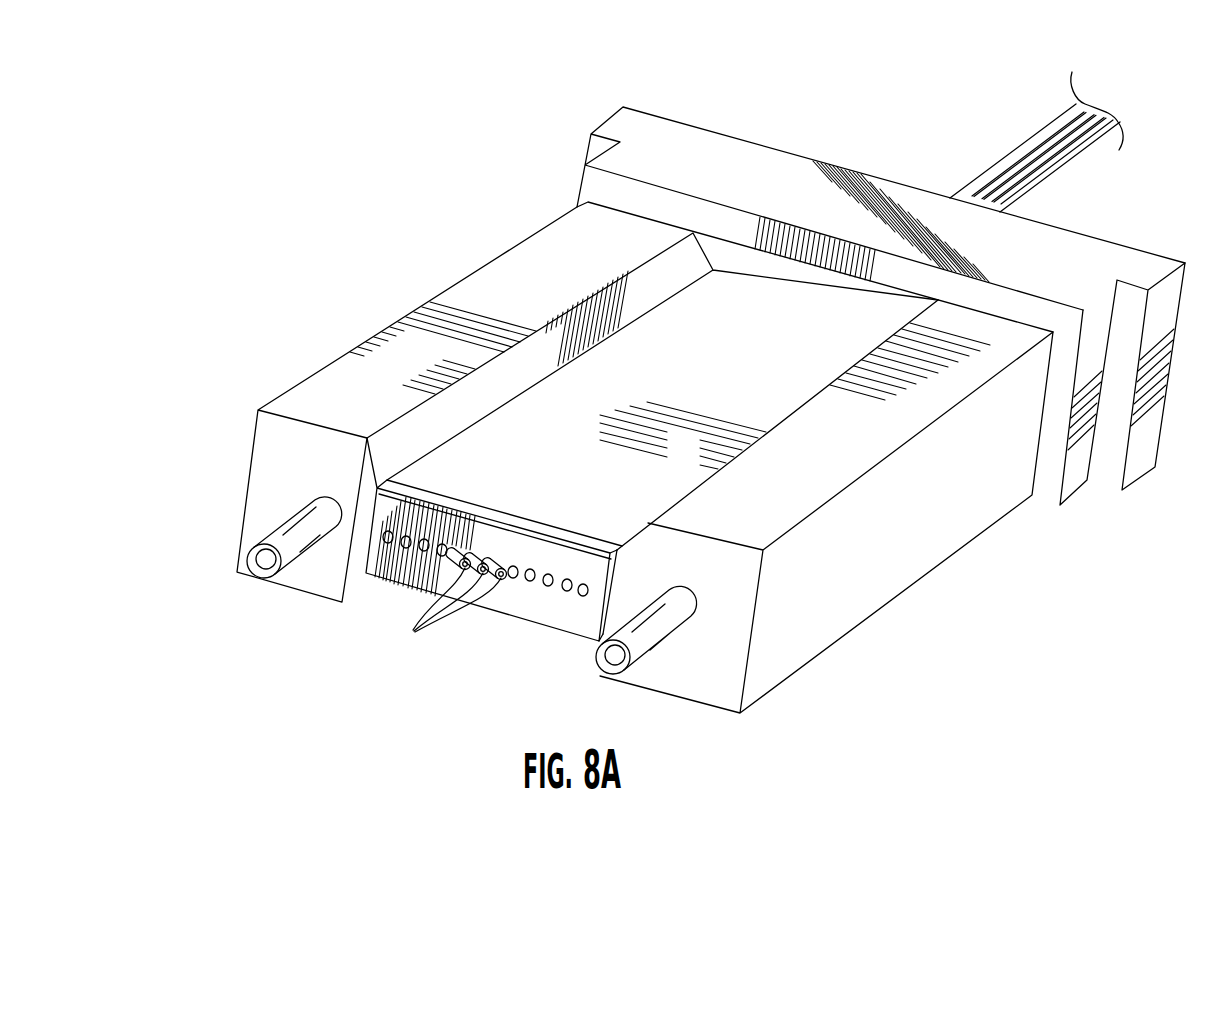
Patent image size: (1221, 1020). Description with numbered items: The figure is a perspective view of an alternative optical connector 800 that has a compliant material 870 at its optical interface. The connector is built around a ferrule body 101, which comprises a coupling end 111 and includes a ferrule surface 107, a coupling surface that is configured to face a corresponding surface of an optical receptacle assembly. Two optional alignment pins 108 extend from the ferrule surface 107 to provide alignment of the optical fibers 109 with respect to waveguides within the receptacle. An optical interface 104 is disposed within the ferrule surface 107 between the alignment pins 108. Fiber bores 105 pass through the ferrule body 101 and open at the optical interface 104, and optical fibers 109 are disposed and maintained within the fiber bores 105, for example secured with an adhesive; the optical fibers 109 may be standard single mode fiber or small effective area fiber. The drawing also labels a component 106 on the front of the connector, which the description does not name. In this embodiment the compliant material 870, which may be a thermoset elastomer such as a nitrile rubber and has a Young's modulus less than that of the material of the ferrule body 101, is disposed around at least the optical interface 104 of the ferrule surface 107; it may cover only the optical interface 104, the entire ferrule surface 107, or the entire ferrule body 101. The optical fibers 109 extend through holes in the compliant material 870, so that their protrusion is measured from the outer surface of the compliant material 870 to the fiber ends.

The optical connector 800 is at (667, 409).
The ferrule body 101 is at (667, 438).
The optical interface 104 is at (536, 601).
The fiber bores 105 is at (546, 573).
The pin block 106 is at (391, 520).
The ferrule surface 107 is at (284, 459).
The alignment pins 108 is at (294, 552).
The optical fiber 109 is at (1012, 133).
The coupling end 111 is at (402, 302).
The compliant material 870 is at (622, 590).